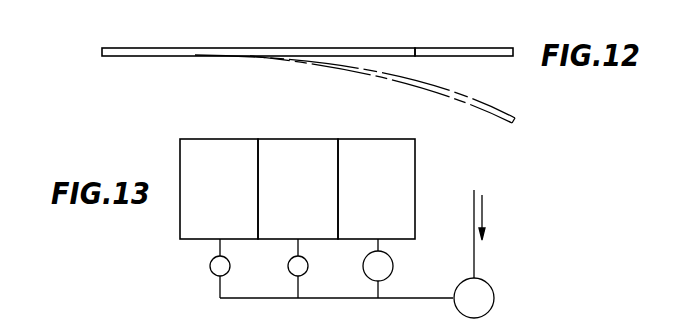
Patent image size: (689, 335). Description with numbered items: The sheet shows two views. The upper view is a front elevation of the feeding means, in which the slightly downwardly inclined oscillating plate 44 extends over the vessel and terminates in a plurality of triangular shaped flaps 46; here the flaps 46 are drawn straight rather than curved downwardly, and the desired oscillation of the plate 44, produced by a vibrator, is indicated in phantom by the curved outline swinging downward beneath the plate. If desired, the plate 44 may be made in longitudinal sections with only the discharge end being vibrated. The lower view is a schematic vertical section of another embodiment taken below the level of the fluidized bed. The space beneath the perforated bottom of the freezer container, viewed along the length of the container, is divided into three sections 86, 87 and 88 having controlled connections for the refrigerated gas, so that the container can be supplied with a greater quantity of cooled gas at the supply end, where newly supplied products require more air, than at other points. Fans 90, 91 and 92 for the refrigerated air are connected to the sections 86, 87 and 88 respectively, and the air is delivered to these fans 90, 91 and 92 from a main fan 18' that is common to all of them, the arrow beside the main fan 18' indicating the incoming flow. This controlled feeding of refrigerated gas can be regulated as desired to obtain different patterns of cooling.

In FIG. 12, the oscillating plate 44 is at (375, 40).
In FIG. 12, the triangular shaped flaps 46 is at (486, 48).
In FIG. 13, the section 88 is at (218, 152).
In FIG. 13, the section 87 is at (295, 152).
In FIG. 13, the section 86 is at (371, 153).
In FIG. 13, the fan 92 is at (225, 269).
In FIG. 13, the fan 91 is at (304, 270).
In FIG. 13, the fan 90 is at (392, 270).
In FIG. 13, the main fan 18' is at (494, 254).